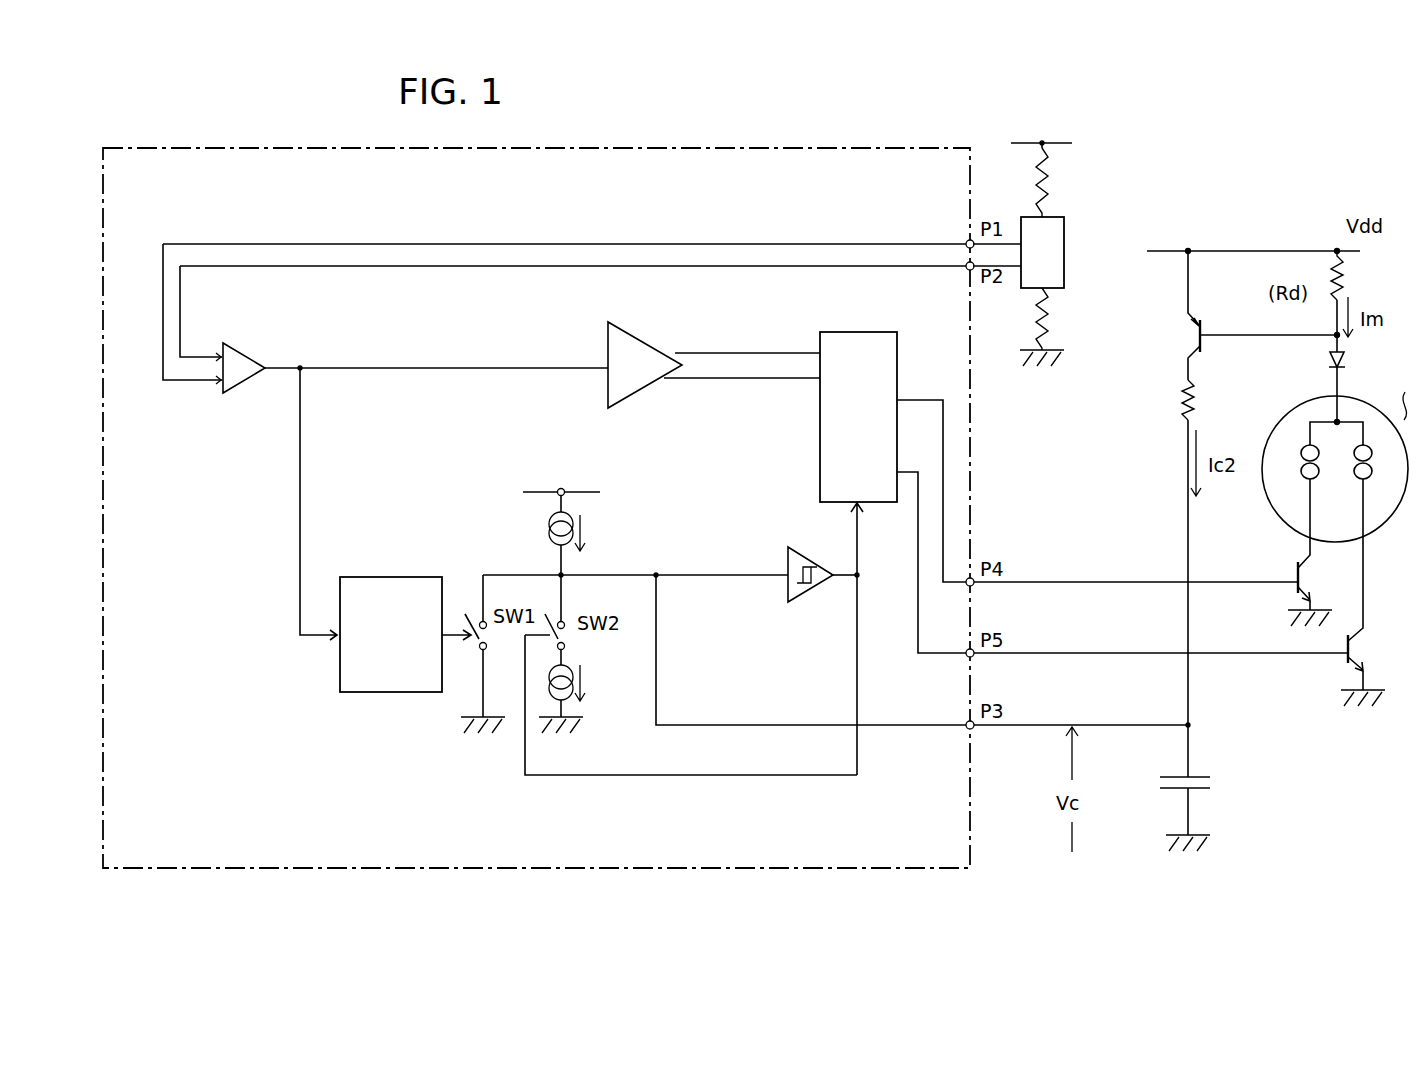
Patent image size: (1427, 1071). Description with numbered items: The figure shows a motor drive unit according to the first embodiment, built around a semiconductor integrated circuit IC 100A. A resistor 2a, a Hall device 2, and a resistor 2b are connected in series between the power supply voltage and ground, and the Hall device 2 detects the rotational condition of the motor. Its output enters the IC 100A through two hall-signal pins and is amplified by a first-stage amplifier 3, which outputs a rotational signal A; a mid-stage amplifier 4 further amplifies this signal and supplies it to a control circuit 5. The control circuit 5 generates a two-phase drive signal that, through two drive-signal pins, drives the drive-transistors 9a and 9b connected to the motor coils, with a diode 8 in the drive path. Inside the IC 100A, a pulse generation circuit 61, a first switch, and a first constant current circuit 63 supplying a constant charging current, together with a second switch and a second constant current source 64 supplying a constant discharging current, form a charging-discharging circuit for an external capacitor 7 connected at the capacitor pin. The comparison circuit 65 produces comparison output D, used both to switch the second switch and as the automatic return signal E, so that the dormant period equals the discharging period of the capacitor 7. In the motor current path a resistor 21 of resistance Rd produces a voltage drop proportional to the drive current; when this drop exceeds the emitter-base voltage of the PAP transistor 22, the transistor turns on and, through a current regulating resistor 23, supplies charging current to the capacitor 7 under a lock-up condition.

The IC 100A is at (634, 148).
The Hall device 2 is at (1046, 243).
The resistor 2a is at (1031, 192).
The resistor 2b is at (1050, 304).
The first-stage amplifier 3 is at (244, 349).
The mid-stage amplifier 4 is at (650, 340).
The control circuit 5 is at (870, 332).
The pulse generation circuit 61 is at (386, 577).
The first constant current circuit 63 is at (549, 526).
The second constant current source 64 is at (547, 688).
The comparison circuit 65 is at (811, 548).
The capacitor 7 is at (1214, 776).
The diode 8 is at (1355, 357).
The drive-transistor 9a is at (1310, 581).
The drive-transistor 9b is at (1370, 636).
The resistor 21 is at (1362, 283).
The PAP transistor 22 is at (1184, 340).
The resistor 23 is at (1172, 410).